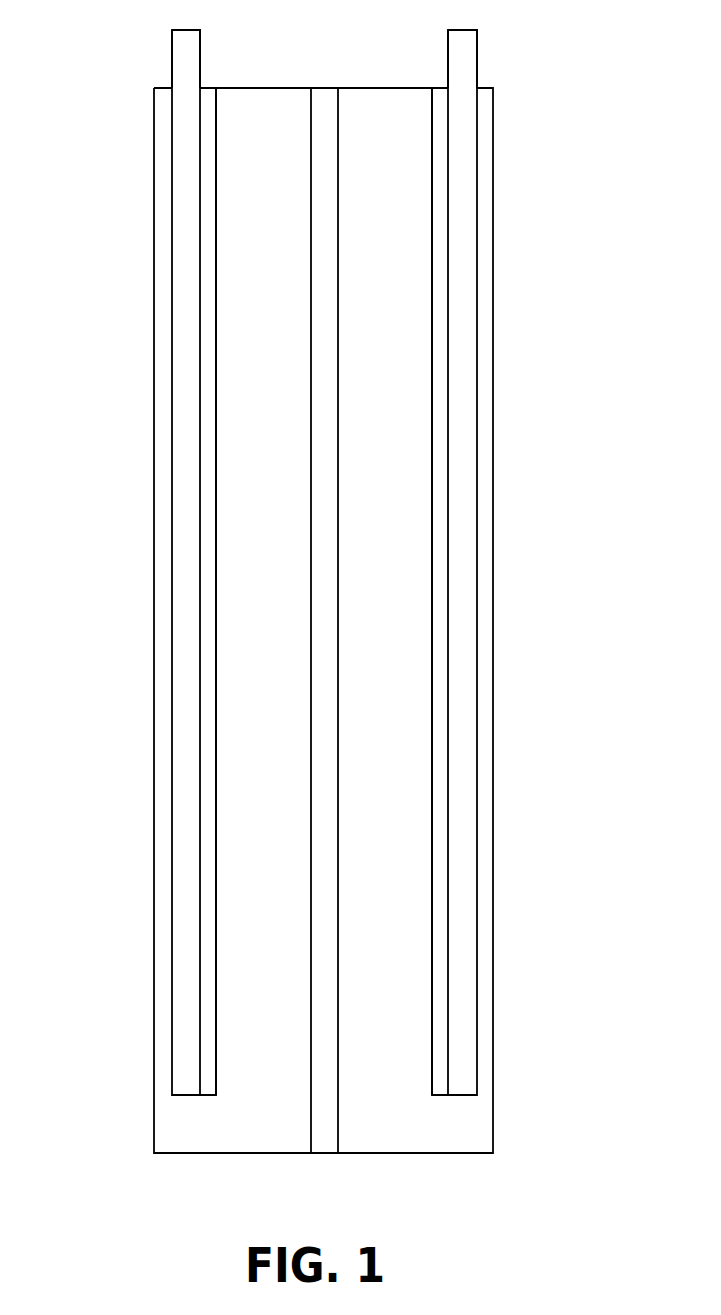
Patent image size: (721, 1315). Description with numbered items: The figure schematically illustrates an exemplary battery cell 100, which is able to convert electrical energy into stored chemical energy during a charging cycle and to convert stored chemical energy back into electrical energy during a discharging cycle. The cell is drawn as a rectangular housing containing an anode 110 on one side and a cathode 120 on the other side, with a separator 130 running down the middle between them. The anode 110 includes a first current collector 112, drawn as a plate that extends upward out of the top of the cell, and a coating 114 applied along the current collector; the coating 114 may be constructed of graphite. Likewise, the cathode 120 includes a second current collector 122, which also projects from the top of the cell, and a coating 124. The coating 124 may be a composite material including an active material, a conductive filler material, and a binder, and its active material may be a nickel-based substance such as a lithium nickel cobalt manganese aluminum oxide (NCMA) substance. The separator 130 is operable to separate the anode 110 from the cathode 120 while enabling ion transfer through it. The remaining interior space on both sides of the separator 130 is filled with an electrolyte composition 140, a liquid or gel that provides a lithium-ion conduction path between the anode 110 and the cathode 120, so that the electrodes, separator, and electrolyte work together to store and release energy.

The battery cell 100 is at (493, 229).
The anode 110 is at (187, 298).
The first current collector 112 is at (172, 71).
The coating 114 is at (208, 443).
The cathode 120 is at (463, 357).
The second current collector 122 is at (477, 59).
The coating 124 is at (440, 443).
The separator 130 is at (339, 1115).
The electrolyte composition 140 is at (265, 687).